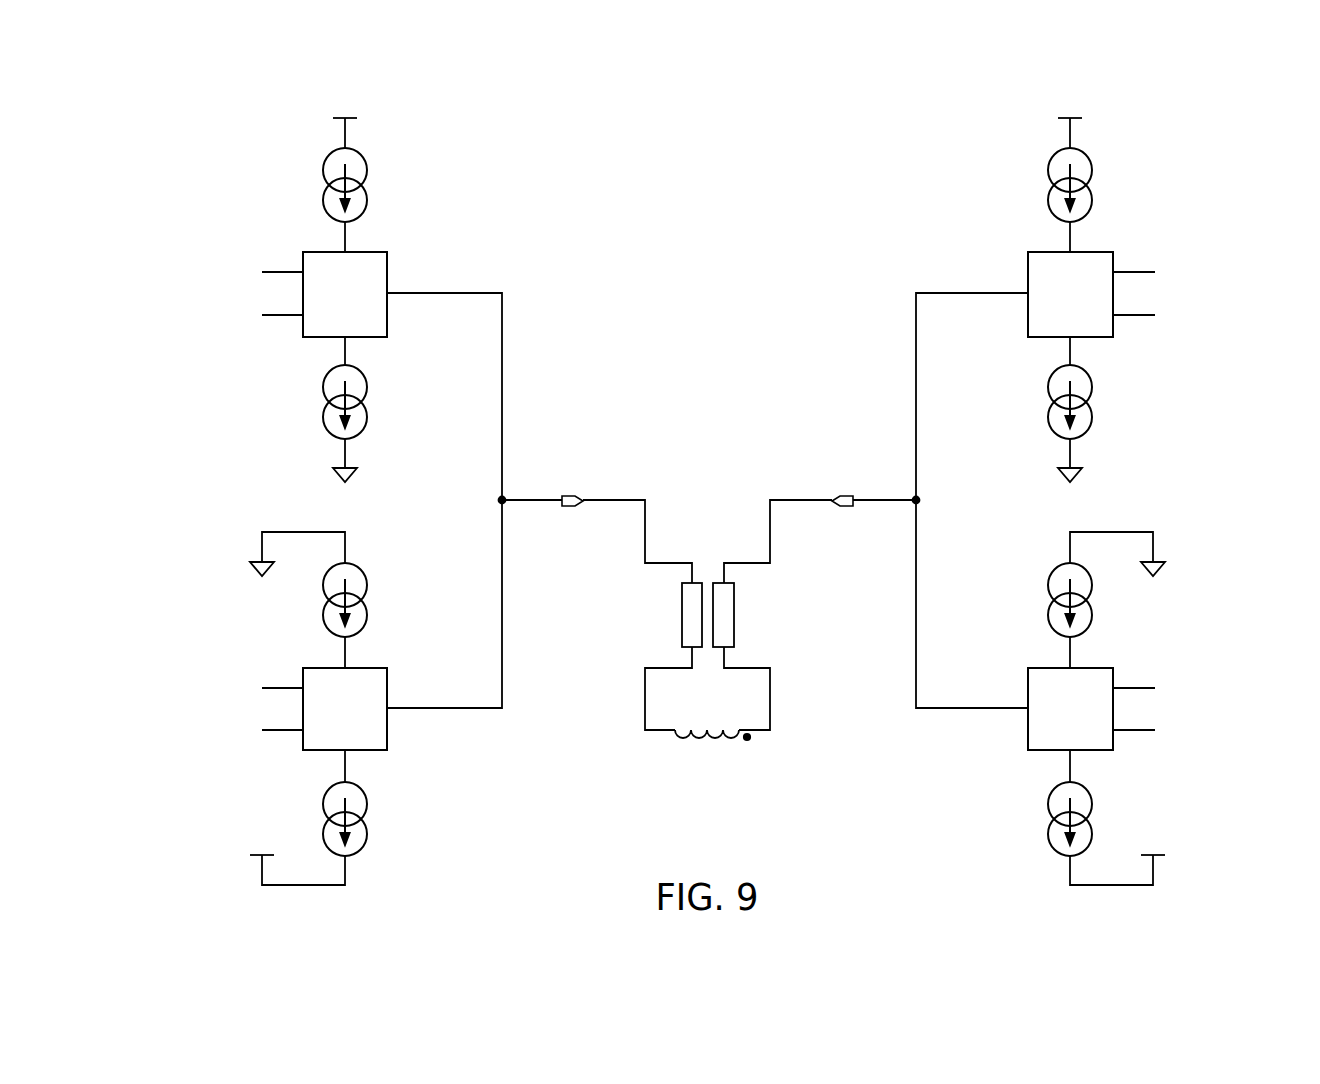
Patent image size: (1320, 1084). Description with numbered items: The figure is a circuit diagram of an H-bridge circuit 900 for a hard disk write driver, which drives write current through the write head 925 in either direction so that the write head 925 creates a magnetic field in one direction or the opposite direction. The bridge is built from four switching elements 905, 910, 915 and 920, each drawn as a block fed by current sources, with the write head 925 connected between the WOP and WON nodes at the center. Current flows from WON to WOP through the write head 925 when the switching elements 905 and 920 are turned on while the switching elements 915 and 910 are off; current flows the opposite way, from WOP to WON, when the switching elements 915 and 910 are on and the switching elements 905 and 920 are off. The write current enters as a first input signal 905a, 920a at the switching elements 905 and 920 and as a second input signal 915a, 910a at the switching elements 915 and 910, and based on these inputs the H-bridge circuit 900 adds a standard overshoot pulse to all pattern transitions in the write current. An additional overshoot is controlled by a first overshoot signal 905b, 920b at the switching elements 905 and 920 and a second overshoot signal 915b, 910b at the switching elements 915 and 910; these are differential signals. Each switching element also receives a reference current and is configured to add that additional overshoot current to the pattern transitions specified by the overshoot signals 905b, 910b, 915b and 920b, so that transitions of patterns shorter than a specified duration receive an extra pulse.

The H-bridge circuit 900 is at (204, 157).
The switching element 905 is at (388, 284).
The first input signal 905a is at (215, 257).
The first overshoot signal 905b is at (192, 327).
The switching element 910 is at (1027, 283).
The second input signal 910a is at (1203, 256).
The second overshoot signal 910b is at (1227, 332).
The switching element 915 is at (388, 719).
The second input signal 915a is at (215, 672).
The second overshoot signal 915b is at (192, 742).
The switching element 920 is at (1027, 718).
The first input signal 920a is at (1203, 671).
The first overshoot signal 920b is at (1227, 745).
The write head 925 is at (705, 548).